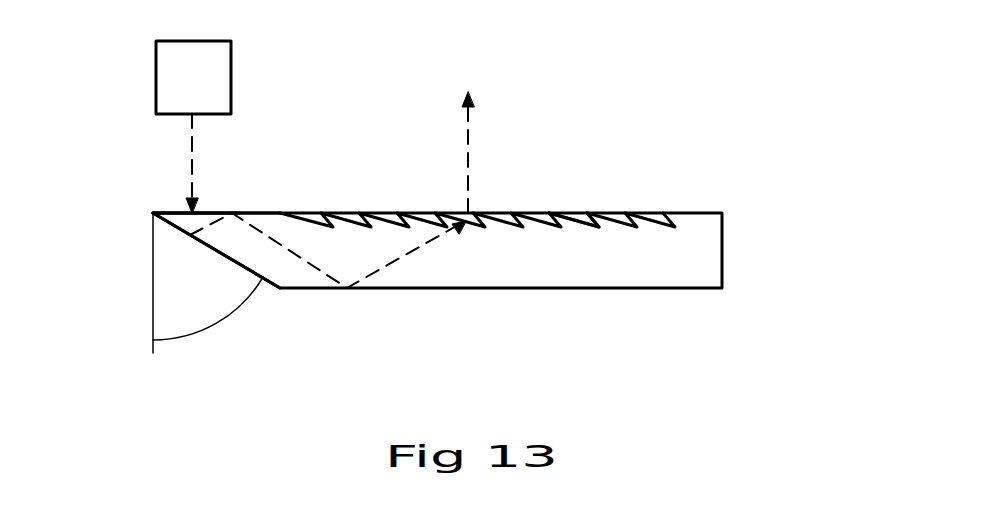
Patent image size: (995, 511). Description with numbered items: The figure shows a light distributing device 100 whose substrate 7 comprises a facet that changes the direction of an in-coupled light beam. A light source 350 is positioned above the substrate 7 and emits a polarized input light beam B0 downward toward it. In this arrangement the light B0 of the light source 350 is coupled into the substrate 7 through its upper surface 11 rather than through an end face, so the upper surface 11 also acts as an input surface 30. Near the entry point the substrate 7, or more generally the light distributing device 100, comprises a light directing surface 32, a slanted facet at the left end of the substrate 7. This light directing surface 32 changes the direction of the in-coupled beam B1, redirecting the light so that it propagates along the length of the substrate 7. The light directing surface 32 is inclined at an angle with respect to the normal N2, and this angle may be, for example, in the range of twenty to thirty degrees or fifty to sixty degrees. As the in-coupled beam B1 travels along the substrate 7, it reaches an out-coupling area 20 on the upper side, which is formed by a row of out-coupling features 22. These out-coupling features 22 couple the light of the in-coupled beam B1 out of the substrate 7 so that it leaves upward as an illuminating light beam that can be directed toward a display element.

The light source 350 is at (156, 70).
The substrate 7 is at (717, 250).
The upper surface 11 is at (255, 213).
The input surface 30 is at (214, 213).
The light directing surface 32 is at (215, 249).
The out-coupling area 20 is at (280, 206).
The out-coupling features 22 is at (605, 222).
The light distributing device 100 is at (530, 203).
The input light beam B0 is at (169, 163).
The in-coupled beam B1 is at (332, 190).
The normal N2 is at (148, 306).